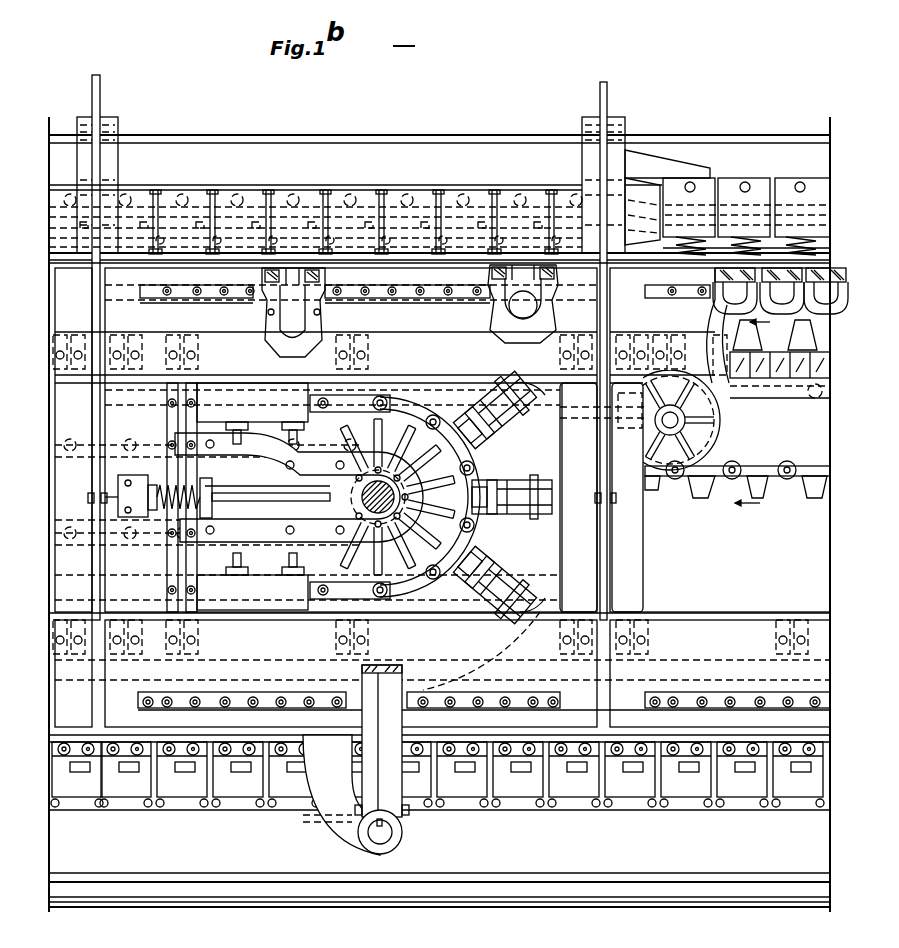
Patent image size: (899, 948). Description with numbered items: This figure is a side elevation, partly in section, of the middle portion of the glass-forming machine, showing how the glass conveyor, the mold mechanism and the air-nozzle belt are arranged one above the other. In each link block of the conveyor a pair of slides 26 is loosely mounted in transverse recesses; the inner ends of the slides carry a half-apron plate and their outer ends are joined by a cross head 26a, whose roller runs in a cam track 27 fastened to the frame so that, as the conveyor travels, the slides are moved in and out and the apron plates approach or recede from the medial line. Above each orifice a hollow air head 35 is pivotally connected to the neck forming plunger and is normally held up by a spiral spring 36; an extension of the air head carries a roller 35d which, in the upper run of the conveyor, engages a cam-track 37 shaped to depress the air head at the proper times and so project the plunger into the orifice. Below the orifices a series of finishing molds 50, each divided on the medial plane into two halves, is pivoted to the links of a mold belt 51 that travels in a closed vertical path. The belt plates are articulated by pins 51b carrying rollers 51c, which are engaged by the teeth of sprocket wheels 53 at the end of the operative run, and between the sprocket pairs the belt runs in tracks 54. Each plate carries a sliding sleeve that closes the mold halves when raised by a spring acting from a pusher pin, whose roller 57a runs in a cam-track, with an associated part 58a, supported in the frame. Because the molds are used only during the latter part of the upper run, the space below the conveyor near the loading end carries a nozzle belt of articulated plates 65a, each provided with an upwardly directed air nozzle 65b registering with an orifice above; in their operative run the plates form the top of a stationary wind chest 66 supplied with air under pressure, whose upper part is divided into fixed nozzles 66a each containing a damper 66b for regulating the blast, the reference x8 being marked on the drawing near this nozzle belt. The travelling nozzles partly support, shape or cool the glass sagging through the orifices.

The air head 35 is at (228, 203).
The cam-track 37 is at (318, 190).
The roller 35d is at (490, 182).
The spiral spring 36 is at (790, 240).
The sprocket wheels 53 is at (268, 480).
The cam track 27 is at (172, 302).
The slides 26 is at (450, 305).
The cross head 26a is at (240, 300).
The finishing molds 50 is at (275, 350).
The tracks 54 is at (282, 392).
The mold belt 51 is at (410, 395).
The rollers 51c is at (475, 525).
The pins 51b is at (385, 600).
The roller 57a is at (188, 476).
The bracket 58a is at (150, 520).
The wind chest 66 is at (770, 430).
The fixed nozzles 66a is at (730, 355).
The damper 66b is at (748, 378).
The direction arrow x8 is at (765, 421).
The articulated plates 65a is at (795, 470).
The air nozzle 65b is at (805, 485).